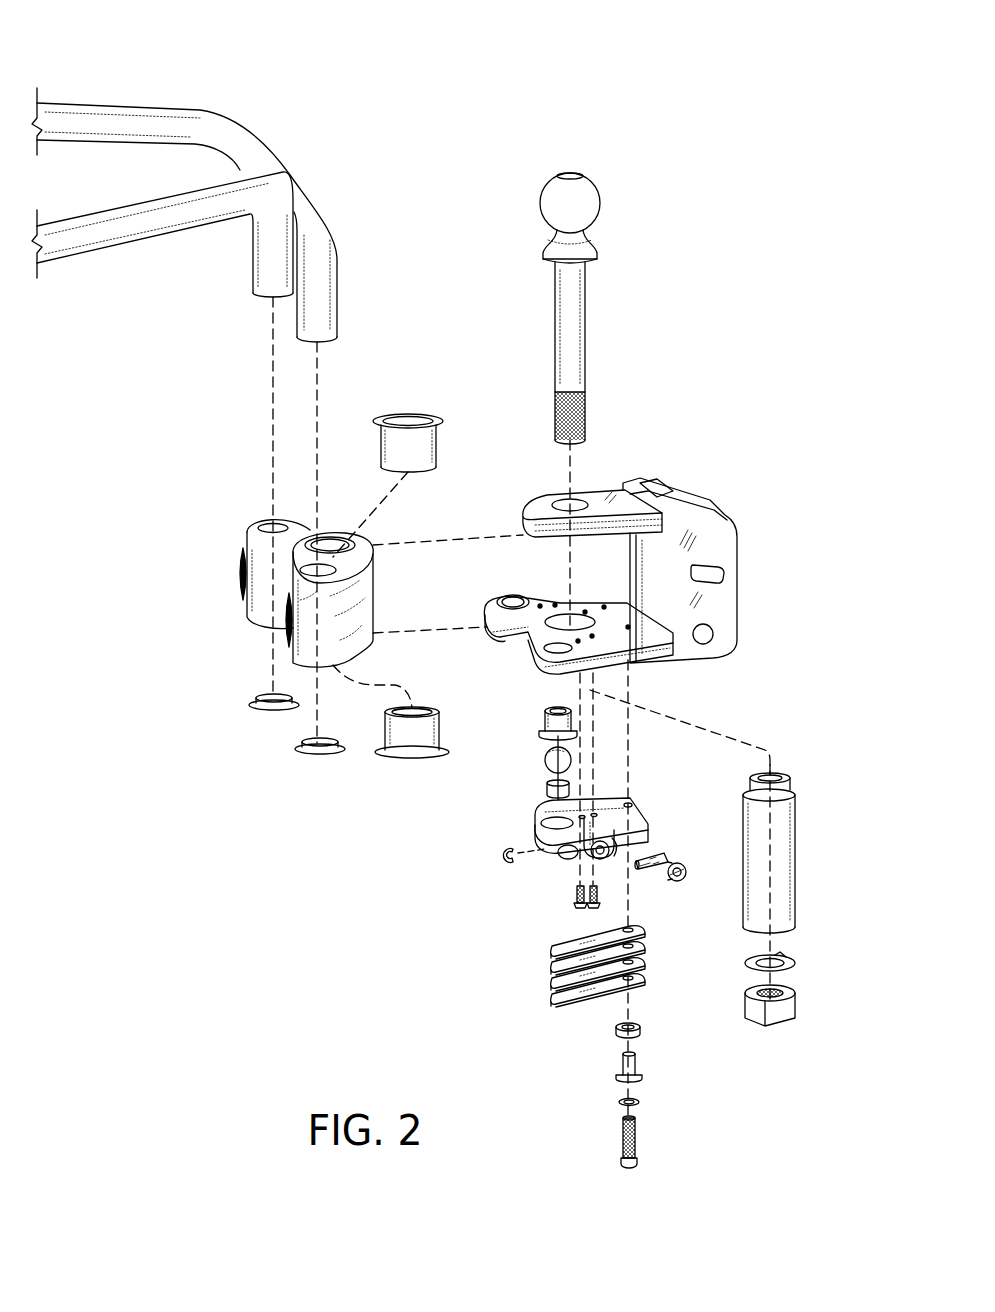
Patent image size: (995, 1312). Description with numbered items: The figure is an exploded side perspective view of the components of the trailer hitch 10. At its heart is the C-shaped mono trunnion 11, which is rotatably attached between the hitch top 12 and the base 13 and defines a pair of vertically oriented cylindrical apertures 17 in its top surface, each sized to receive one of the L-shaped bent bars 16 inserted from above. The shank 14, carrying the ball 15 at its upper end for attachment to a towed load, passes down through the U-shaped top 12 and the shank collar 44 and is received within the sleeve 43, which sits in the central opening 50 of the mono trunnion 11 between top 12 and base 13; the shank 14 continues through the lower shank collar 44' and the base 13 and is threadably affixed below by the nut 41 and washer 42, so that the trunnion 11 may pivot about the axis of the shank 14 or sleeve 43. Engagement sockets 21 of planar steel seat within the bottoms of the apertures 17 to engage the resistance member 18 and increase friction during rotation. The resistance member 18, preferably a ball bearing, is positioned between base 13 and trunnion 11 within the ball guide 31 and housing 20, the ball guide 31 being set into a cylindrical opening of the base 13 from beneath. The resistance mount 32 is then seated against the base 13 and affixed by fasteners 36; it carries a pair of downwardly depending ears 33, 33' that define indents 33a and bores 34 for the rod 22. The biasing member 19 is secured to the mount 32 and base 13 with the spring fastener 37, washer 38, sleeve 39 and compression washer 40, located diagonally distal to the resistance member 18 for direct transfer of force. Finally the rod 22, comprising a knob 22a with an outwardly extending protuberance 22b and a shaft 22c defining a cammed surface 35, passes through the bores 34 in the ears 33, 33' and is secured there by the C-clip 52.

The trailer hitch 10 is at (160, 48).
The mono trunnion 11 is at (257, 616).
The hitch top 12 is at (606, 490).
The base 13 is at (632, 652).
The shank 14 is at (580, 340).
The ball 15 is at (592, 195).
The L-shaped bent bars 16 is at (238, 132).
The apertures 17 is at (265, 525).
The resistance member 18 is at (513, 597).
The biasing member 19 is at (548, 998).
The housing 20 is at (545, 789).
The engagement sockets 21 is at (300, 752).
The rod 22 is at (685, 879).
The knob 22a is at (673, 883).
The protuberance 22b is at (684, 866).
The shaft 22c is at (648, 856).
The ball guide 31 is at (543, 716).
The resistance mount 32 is at (612, 808).
The ear 33 is at (610, 871).
The opposing ear 33' is at (552, 866).
The indent 33a is at (592, 820).
The bore 34 is at (613, 856).
The cammed surface 35 is at (662, 857).
The fasteners 36 is at (591, 908).
The spring fastener 37 is at (620, 1140).
The washer 38 is at (617, 1102).
The sleeve 39 is at (620, 1066).
The compression washer 40 is at (614, 1030).
The nut 41 is at (798, 1008).
The washer 42 is at (790, 960).
The sleeve 43 is at (785, 875).
The shank collar 44 is at (409, 485).
The shank collar 44' is at (400, 711).
The central opening 50 is at (345, 550).
The C-clip 52 is at (498, 855).